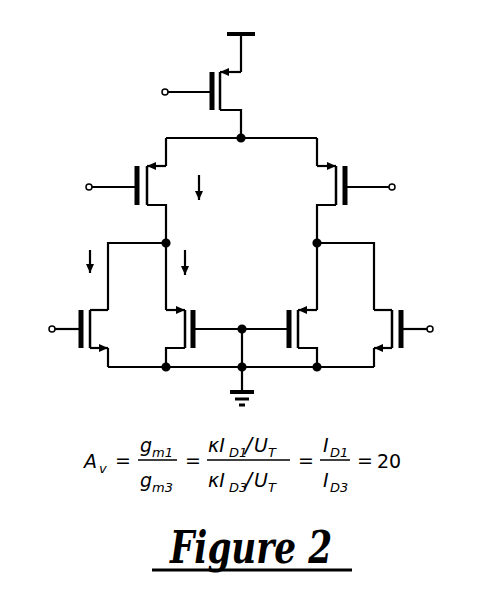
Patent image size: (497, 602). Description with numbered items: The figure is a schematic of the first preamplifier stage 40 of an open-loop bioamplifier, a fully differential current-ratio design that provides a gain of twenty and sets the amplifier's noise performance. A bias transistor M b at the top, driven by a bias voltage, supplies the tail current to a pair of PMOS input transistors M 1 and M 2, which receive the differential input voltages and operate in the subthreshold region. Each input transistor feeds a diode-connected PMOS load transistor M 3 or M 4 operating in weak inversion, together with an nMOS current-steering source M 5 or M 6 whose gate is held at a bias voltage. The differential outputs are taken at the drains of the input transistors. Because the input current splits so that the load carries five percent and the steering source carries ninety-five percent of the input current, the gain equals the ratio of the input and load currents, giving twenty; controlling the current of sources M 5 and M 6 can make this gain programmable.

The first preamplifier stage 40 is at (316, 56).
The input transistor M1 1 is at (138, 190).
The input transistor M2 2 is at (341, 190).
The load transistor M3 3 is at (193, 305).
The load transistor M4 4 is at (289, 305).
The current-steering source transistor M5 5 is at (89, 338).
The current-steering source transistor M6 6 is at (391, 338).
The bias transistor Mb b is at (221, 86).